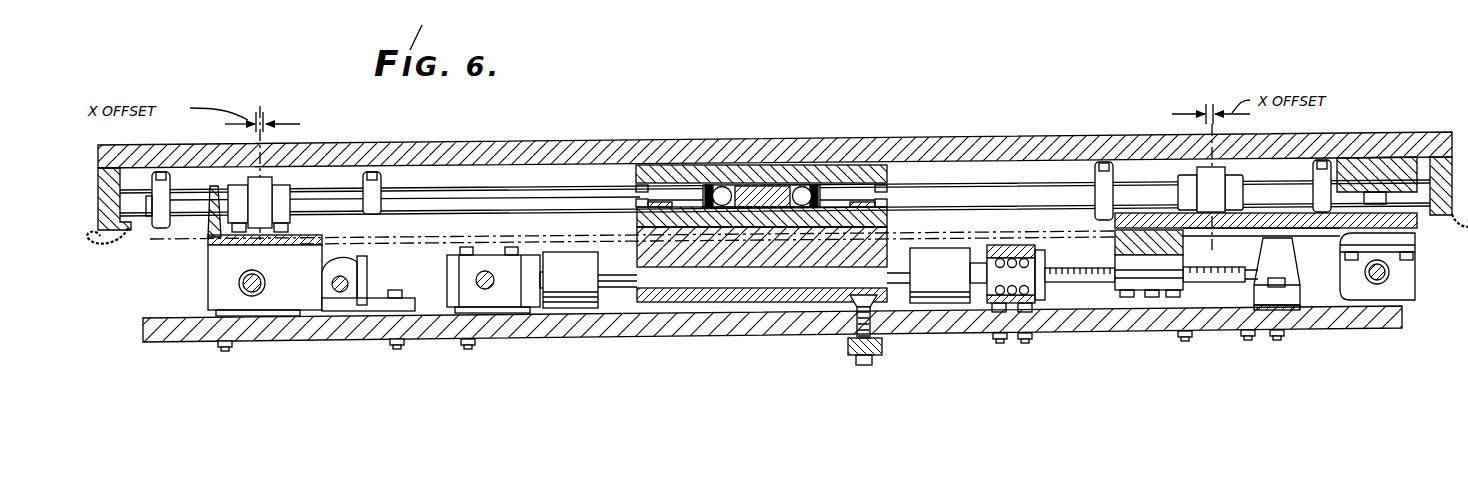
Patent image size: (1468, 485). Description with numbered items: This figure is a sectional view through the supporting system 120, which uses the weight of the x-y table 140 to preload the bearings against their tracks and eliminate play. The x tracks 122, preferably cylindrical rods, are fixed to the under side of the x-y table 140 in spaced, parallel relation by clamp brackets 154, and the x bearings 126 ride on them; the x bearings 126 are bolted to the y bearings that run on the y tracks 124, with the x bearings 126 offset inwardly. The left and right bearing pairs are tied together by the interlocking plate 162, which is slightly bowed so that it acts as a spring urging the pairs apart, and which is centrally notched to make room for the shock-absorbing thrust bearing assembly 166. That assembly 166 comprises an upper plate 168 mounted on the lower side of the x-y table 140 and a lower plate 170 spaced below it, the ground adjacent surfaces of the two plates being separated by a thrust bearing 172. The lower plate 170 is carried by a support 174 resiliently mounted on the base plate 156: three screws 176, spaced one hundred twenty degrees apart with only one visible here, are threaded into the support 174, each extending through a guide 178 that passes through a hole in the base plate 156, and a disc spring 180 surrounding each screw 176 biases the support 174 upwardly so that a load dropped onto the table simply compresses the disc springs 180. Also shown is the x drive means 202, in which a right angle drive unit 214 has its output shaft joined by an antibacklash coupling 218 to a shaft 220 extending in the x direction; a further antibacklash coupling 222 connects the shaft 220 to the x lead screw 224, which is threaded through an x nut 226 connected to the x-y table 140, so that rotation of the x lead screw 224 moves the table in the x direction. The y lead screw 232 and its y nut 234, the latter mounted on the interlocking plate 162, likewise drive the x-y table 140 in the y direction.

The supporting system 120 is at (590, 192).
The x tracks 122 is at (546, 198).
The y tracks 124 is at (253, 292).
The x bearings 126 is at (287, 190).
The x-y table 140 is at (849, 146).
The clamp brackets 154 is at (372, 198).
The base plate 156 is at (1078, 324).
The interlocking plate 162 is at (944, 236).
The shock-absorbing thrust bearing assembly 166 is at (737, 166).
The upper plate 168 is at (677, 176).
The lower plate 170 is at (770, 218).
The thrust bearing 172 is at (760, 200).
The support 174 is at (800, 297).
The screws 176 is at (868, 364).
The guide 178 is at (883, 346).
The disc spring 180 is at (855, 302).
The x drive means 202 is at (1150, 300).
The right angle drive unit 214 is at (496, 296).
The antibacklash coupling 218 is at (578, 290).
The shaft 220 is at (672, 276).
The antibacklash coupling 222 is at (953, 292).
The x lead screw 224 is at (1068, 284).
The x nut 226 is at (1168, 282).
The y lead screw 232 is at (325, 292).
The y nut 234 is at (346, 298).